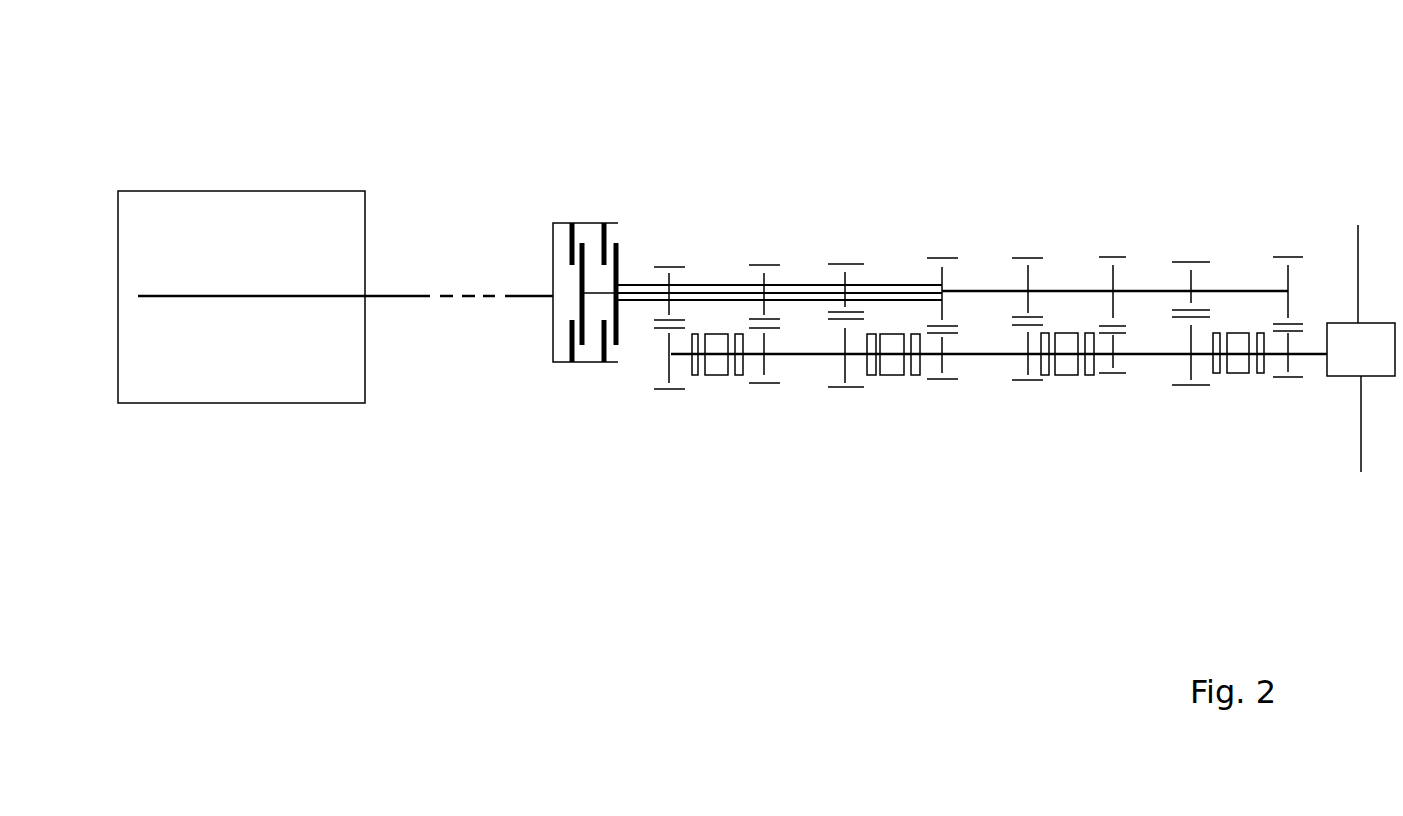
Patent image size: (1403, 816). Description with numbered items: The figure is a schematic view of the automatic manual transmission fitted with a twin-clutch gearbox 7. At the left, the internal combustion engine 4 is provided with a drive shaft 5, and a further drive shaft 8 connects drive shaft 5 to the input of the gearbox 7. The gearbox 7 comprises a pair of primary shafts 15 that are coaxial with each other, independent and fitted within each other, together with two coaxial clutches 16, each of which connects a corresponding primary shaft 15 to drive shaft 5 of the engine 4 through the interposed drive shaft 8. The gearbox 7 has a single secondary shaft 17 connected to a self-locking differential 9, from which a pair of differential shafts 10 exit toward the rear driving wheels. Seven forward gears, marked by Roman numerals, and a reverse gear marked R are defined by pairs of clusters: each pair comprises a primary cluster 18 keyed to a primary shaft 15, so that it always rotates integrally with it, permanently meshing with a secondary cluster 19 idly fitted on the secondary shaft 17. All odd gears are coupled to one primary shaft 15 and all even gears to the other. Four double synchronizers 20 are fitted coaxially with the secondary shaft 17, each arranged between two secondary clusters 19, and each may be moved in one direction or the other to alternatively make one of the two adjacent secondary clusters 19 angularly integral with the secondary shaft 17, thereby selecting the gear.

The internal combustion engine 4 is at (203, 227).
The drive shaft 5 is at (290, 297).
The twin-clutch gearbox 7 is at (924, 105).
The drive shaft 8 is at (507, 293).
The self-locking differential 9 is at (1361, 349).
The differential shafts 10 is at (1358, 230).
The primary shafts 15 is at (637, 284).
The clutches 16 is at (602, 373).
The secondary shaft 17 is at (818, 356).
The primary cluster 18 is at (1028, 280).
The secondary cluster 19 is at (1025, 368).
The double synchronizers 20 is at (718, 376).